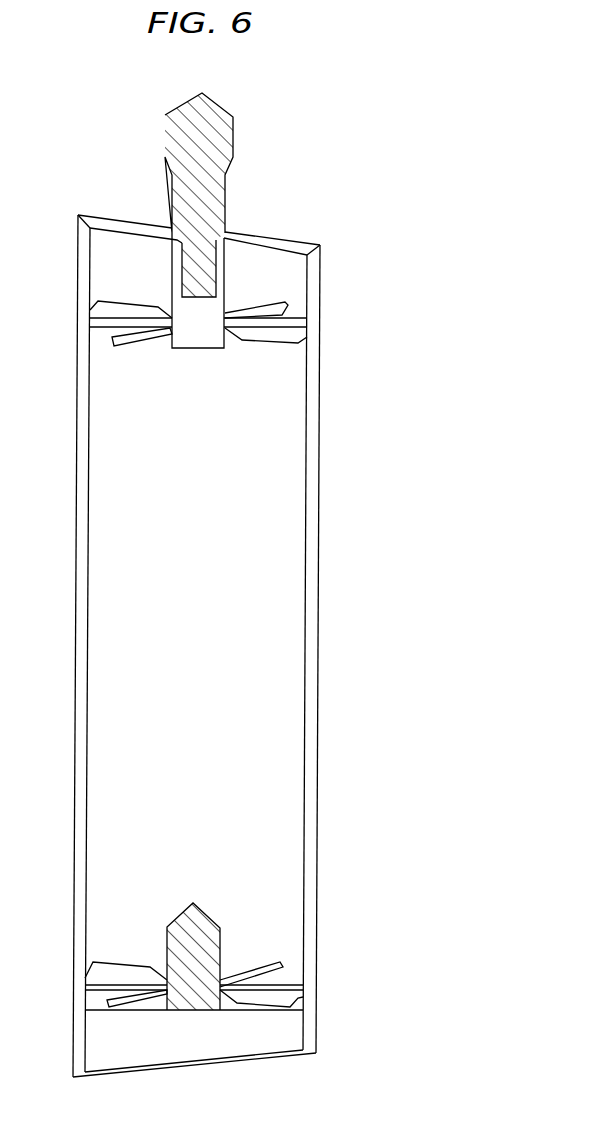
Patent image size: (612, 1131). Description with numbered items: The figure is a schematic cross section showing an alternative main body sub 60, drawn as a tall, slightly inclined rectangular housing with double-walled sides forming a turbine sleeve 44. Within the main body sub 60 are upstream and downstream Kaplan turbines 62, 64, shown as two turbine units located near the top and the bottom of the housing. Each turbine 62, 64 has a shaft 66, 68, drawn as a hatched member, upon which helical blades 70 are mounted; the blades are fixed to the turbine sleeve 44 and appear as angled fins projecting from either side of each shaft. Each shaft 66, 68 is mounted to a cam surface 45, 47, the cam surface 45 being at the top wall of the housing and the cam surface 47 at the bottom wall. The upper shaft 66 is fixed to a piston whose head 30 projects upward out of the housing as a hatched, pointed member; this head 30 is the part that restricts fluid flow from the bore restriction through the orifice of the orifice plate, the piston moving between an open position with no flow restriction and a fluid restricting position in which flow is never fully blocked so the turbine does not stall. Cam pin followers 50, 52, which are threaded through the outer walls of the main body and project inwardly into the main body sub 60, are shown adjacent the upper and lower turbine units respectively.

The head 30 is at (225, 140).
The turbine sleeve 44 is at (318, 506).
The cam surface 45 is at (280, 245).
The cam surface 47 is at (267, 1053).
The cam pin follower 50 is at (275, 338).
The cam pin follower 52 is at (283, 998).
The main body sub 60 is at (383, 643).
The upstream Kaplan turbine 62 is at (177, 340).
The downstream Kaplan turbine 64 is at (125, 963).
The upper shaft 66 is at (207, 342).
The shaft 68 is at (212, 952).
The helical blades 70 is at (122, 313).